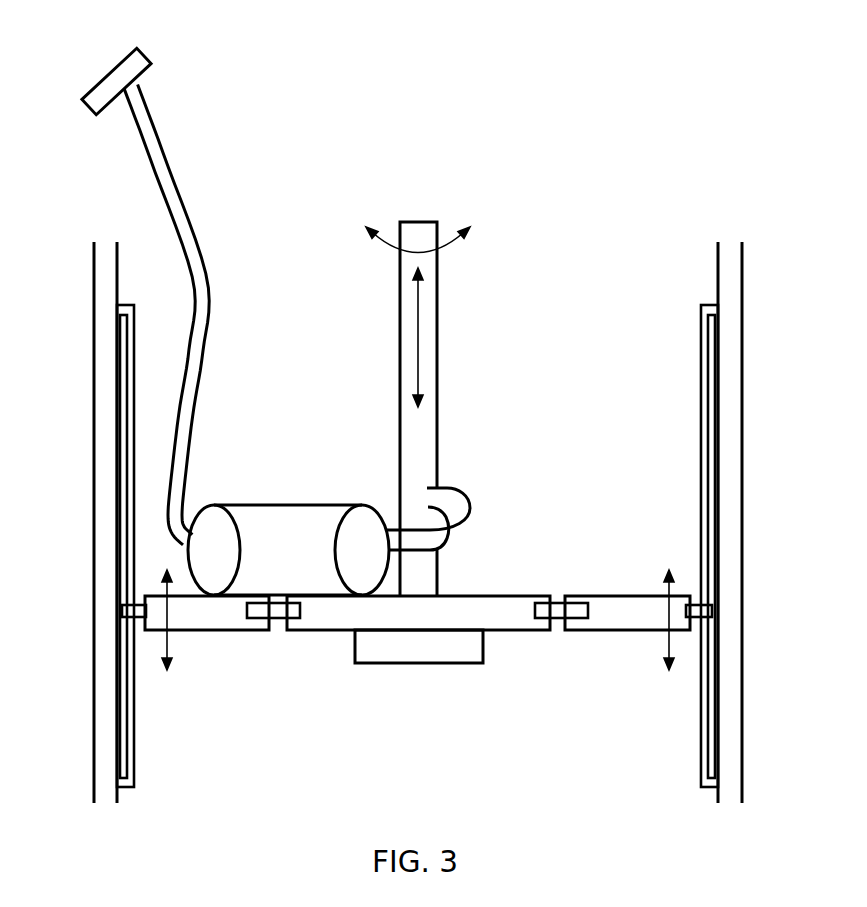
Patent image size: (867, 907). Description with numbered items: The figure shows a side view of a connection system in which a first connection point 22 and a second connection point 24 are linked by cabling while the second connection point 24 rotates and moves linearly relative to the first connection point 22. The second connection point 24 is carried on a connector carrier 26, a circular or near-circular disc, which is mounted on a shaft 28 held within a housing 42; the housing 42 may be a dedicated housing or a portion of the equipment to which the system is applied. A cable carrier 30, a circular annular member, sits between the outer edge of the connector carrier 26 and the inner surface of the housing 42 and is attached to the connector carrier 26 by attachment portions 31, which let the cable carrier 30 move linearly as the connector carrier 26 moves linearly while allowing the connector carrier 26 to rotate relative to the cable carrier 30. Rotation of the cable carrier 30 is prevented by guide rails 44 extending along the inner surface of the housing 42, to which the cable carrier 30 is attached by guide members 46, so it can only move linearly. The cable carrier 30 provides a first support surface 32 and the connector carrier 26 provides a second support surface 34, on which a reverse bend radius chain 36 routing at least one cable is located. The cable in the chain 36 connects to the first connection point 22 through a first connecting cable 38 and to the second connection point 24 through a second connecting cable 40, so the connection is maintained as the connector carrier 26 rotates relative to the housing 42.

The first connection point 22 is at (137, 60).
The second connection point 24 is at (440, 650).
The connector carrier 26 is at (507, 605).
The shaft 28 is at (418, 232).
The cable carrier 30 is at (222, 620).
The attachment portions 31 is at (277, 612).
The first support surface 32 is at (152, 595).
The second support surface 34 is at (463, 587).
The reverse bend radius chain 36 is at (287, 513).
The first connecting cable 38 is at (173, 170).
The second connecting cable 40 is at (457, 513).
The housing 42 is at (110, 281).
The guide rails 44 is at (130, 402).
The guide members 46 is at (127, 610).